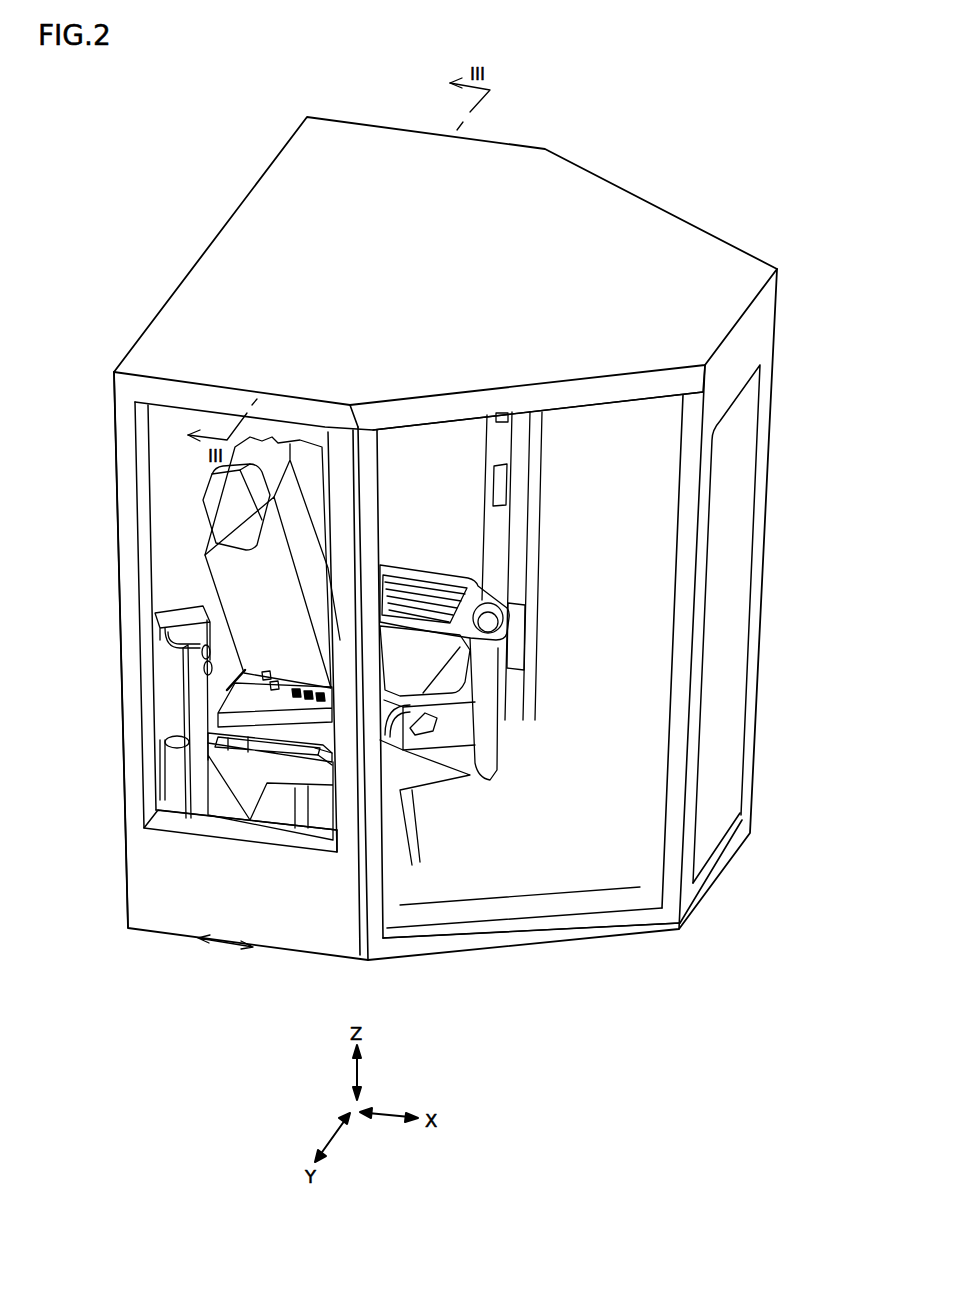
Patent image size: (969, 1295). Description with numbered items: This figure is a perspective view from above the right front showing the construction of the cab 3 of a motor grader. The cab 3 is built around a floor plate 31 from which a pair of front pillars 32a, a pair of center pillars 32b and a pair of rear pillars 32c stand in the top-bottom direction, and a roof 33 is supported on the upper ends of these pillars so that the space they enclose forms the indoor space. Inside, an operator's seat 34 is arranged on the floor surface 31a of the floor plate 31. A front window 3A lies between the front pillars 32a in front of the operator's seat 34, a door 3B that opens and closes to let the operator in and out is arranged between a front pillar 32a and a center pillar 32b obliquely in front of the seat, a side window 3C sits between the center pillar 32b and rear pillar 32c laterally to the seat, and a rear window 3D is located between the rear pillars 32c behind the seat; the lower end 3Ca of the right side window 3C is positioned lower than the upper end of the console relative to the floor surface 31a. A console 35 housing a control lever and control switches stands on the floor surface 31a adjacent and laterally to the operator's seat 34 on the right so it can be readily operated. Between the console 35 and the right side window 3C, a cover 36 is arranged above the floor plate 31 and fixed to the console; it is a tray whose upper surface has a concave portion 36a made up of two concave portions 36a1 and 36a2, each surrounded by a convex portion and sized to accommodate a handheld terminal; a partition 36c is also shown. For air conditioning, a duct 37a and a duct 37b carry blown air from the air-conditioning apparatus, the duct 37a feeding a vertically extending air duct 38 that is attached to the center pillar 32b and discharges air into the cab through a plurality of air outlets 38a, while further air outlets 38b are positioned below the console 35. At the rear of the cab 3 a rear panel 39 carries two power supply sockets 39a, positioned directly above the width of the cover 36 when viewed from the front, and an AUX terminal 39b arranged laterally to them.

The cab 3 is at (679, 178).
The front window 3A is at (740, 502).
The door 3B is at (620, 578).
The side window 3C is at (408, 458).
The lower end of side window 3Ca is at (205, 827).
The rear window 3D is at (165, 430).
The floor plate 31 is at (543, 888).
The floor surface 31a is at (485, 860).
The front pillar 32a is at (698, 646).
The center pillar 32b is at (545, 546).
The rear pillar 32c is at (118, 628).
The roof 33 is at (693, 232).
The operator's seat 34 is at (215, 532).
The console 35 is at (225, 700).
The cover 36 is at (215, 745).
The concave portion 36a is at (312, 989).
The concave portion 36a1 is at (297, 752).
The concave portion 36a2 is at (228, 743).
The partition wall 36c is at (173, 773).
The duct 37a is at (328, 862).
The duct 37b is at (175, 780).
The air duct 38 is at (487, 425).
The air outlet 38a is at (547, 424).
The air outlet 38b is at (372, 760).
The rear panel 39 is at (168, 620).
The power supply socket 39a is at (178, 655).
The AUX terminal 39b is at (200, 655).